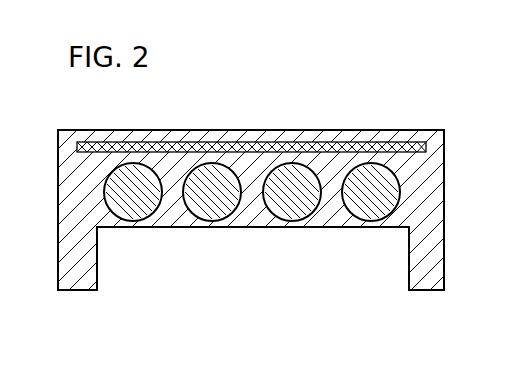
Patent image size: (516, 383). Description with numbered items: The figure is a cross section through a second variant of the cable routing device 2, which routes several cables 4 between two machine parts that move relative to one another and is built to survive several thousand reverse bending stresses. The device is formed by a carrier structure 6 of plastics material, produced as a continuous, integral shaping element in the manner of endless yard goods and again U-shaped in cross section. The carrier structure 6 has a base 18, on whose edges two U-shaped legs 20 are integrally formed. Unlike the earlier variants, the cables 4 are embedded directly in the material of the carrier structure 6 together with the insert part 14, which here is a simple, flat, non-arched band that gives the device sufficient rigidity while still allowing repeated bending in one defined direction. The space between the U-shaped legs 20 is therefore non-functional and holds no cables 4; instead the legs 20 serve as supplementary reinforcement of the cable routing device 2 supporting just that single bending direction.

The cable routing device 2 is at (415, 111).
The cables 4 is at (288, 214).
The carrier structure 6 is at (428, 217).
The insert part 14 is at (297, 147).
The base 18 is at (204, 138).
The U-shaped legs 20 is at (58, 203).